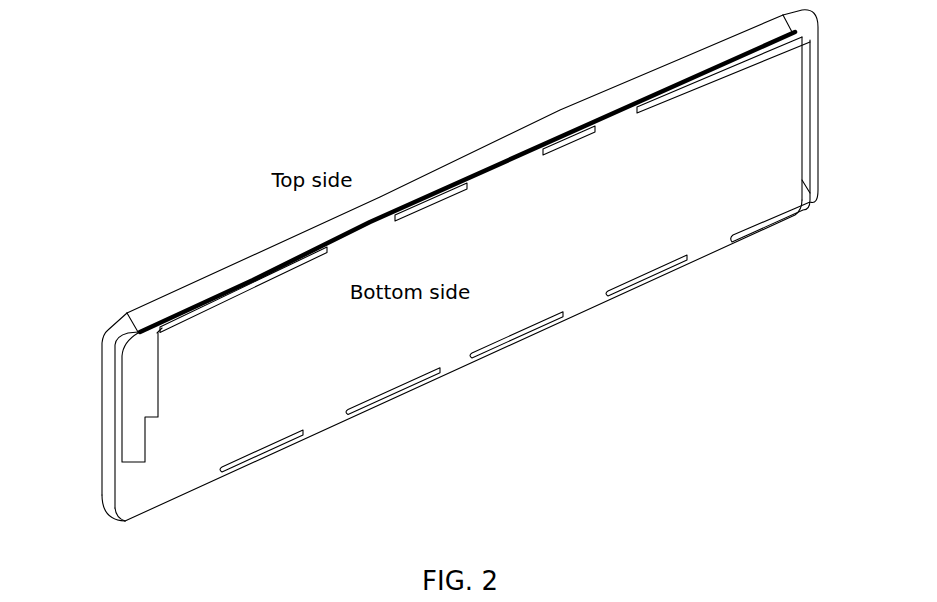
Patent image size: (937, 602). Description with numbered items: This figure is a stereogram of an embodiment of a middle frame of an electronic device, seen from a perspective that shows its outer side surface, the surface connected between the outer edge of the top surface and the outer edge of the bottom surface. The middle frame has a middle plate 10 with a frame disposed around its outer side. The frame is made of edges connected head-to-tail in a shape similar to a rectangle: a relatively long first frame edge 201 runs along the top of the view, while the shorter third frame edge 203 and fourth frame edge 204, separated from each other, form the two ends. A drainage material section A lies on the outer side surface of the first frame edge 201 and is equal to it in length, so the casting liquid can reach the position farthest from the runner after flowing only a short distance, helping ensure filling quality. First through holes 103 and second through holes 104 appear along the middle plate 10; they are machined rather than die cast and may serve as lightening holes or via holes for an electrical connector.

The middle plate 10 is at (413, 352).
The first through hole 103 is at (250, 278).
The second through hole 104 is at (255, 463).
The first frame edge 201 is at (457, 175).
The third frame edge 203 is at (818, 100).
The fourth frame edge 204 is at (103, 451).
The drainage material section A is at (648, 92).